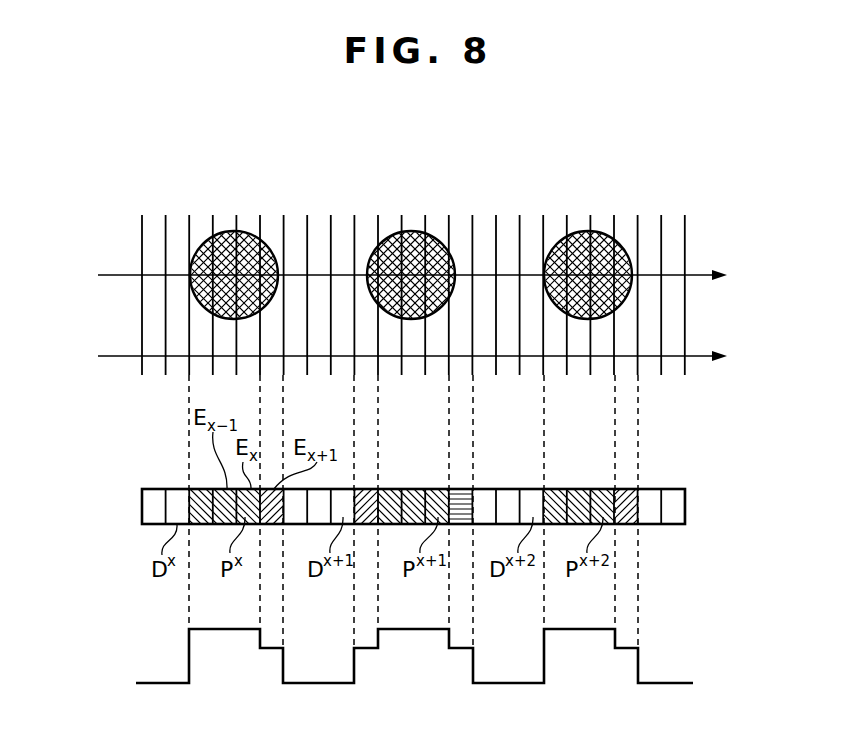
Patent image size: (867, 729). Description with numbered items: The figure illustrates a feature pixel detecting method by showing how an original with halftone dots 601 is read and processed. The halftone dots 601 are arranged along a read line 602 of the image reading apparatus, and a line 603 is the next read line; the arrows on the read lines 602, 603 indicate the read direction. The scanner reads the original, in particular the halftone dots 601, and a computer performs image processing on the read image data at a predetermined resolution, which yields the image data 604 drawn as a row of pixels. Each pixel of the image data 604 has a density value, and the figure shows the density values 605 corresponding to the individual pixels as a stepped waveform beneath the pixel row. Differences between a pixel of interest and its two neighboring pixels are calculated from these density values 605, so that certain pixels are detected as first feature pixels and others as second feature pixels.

The halftone dots 601 is at (582, 233).
The read line 602 is at (387, 275).
The next read line 603 is at (387, 356).
The image data 604 is at (702, 480).
The density values 605 is at (702, 620).